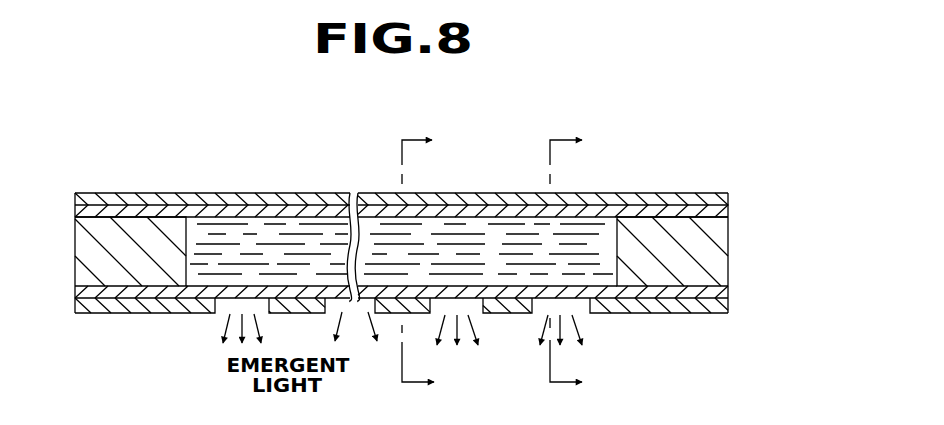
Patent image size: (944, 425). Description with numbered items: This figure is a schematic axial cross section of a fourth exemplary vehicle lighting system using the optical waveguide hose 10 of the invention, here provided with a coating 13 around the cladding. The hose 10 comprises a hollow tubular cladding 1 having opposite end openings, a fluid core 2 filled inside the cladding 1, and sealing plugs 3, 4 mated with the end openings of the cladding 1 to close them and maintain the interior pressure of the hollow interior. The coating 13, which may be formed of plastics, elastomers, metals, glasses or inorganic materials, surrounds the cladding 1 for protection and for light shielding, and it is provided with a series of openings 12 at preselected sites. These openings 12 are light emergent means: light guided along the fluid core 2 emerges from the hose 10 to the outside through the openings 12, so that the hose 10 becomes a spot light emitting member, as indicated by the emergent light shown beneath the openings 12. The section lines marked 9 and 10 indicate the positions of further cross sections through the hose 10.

The hollow tubular cladding 1 is at (160, 212).
The coating 13 is at (258, 200).
The fluid core 2 is at (308, 236).
The sealing plug 3 is at (87, 241).
The sealing plug 4 is at (713, 241).
The openings 12 is at (221, 316).
The section line IX-IX 9 is at (582, 264).
The optical waveguide hose 10 is at (438, 264).